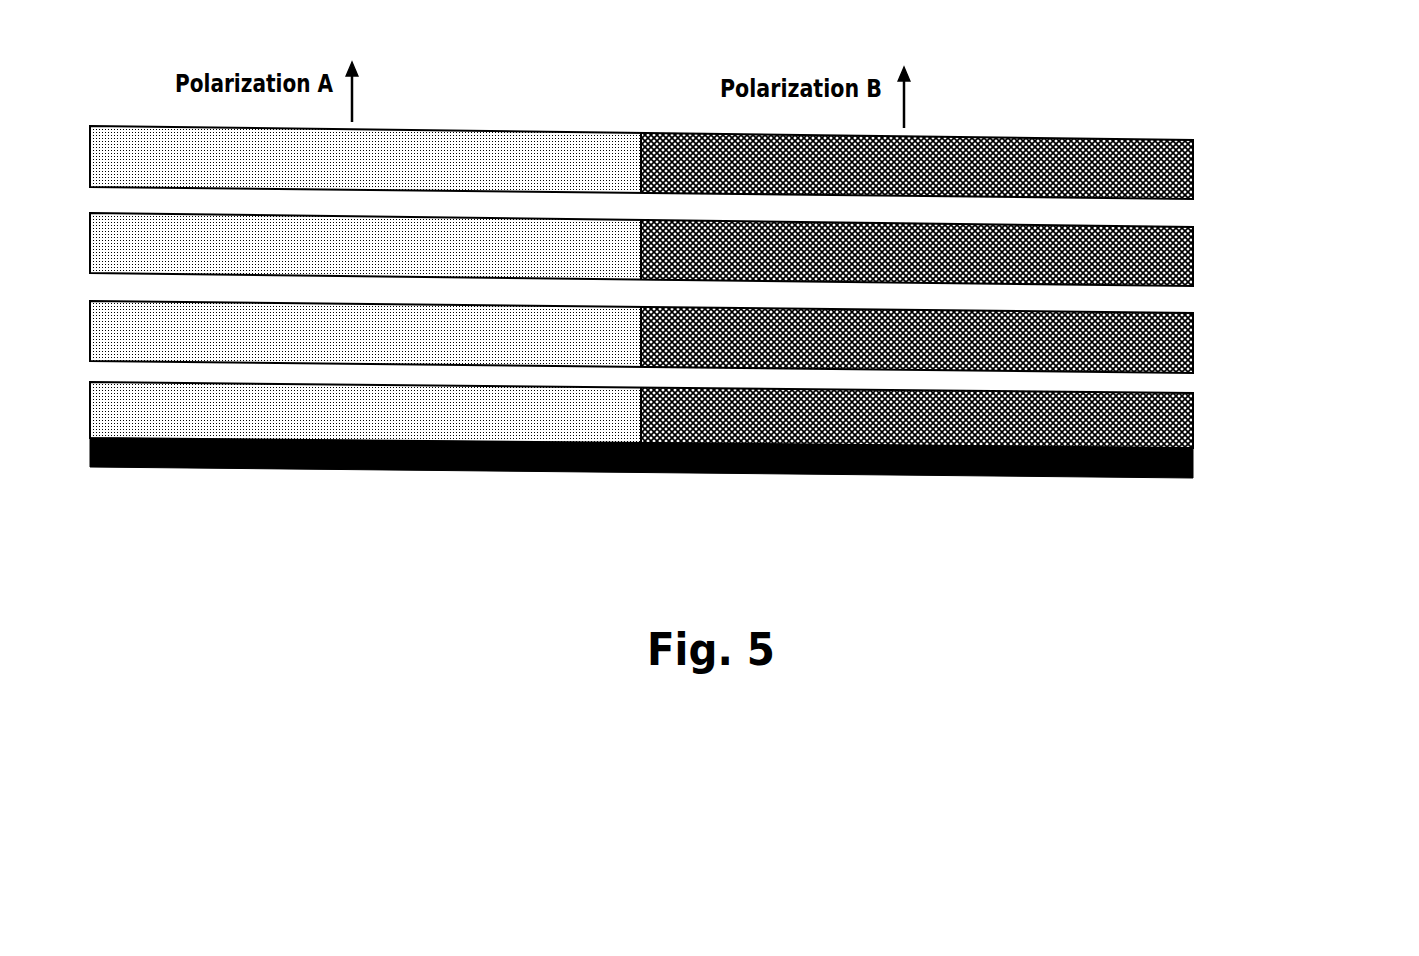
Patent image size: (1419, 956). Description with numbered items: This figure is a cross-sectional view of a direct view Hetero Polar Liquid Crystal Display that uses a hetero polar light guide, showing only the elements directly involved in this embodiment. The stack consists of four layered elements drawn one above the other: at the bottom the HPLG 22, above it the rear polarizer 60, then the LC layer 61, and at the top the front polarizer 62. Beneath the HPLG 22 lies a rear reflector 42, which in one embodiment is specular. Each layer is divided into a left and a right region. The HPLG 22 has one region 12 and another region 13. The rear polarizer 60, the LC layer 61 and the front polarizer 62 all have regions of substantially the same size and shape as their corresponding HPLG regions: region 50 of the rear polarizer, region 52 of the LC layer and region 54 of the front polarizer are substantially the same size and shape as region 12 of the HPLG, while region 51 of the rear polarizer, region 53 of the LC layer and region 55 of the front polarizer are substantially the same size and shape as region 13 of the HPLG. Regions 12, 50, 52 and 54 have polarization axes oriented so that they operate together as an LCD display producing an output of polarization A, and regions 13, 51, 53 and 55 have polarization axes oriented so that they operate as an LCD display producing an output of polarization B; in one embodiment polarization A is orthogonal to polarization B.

The region of HPLG 12 is at (365, 412).
The region of HPLG 13 is at (917, 418).
The HPLG 22 is at (749, 416).
The rear reflector 42 is at (1202, 463).
The region of the rear polarizer 50 is at (365, 334).
The region of the rear polarizer 51 is at (917, 340).
The region of the LC layer 52 is at (365, 246).
The region of the LC layer 53 is at (917, 253).
The region of the front polarizer 54 is at (365, 159).
The region of the front polarizer 55 is at (917, 166).
The rear polarizer 60 is at (749, 337).
The LC layer 61 is at (750, 249).
The front polarizer 62 is at (750, 162).